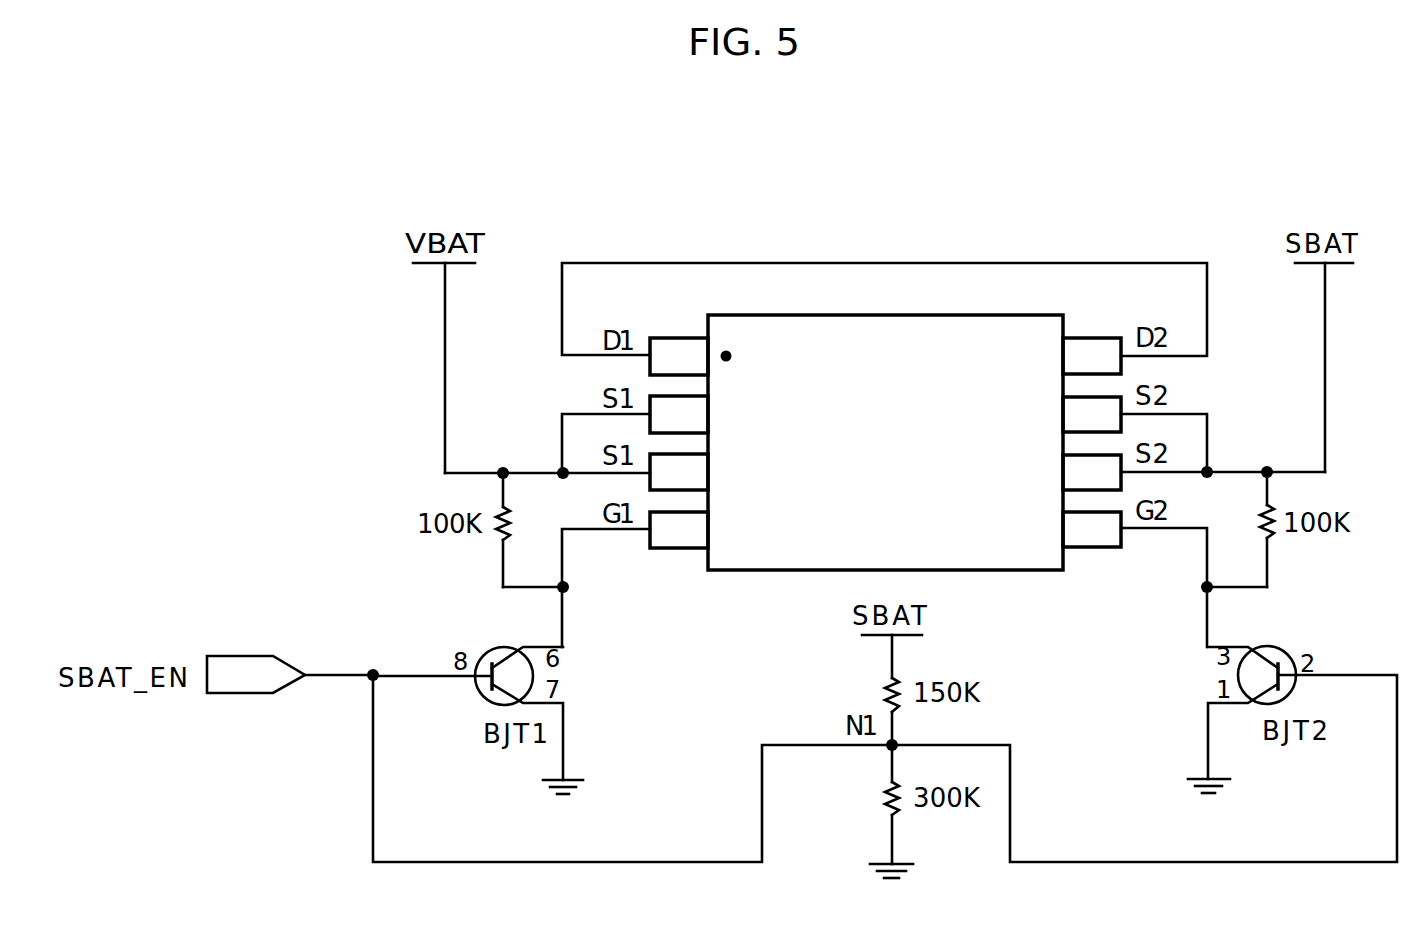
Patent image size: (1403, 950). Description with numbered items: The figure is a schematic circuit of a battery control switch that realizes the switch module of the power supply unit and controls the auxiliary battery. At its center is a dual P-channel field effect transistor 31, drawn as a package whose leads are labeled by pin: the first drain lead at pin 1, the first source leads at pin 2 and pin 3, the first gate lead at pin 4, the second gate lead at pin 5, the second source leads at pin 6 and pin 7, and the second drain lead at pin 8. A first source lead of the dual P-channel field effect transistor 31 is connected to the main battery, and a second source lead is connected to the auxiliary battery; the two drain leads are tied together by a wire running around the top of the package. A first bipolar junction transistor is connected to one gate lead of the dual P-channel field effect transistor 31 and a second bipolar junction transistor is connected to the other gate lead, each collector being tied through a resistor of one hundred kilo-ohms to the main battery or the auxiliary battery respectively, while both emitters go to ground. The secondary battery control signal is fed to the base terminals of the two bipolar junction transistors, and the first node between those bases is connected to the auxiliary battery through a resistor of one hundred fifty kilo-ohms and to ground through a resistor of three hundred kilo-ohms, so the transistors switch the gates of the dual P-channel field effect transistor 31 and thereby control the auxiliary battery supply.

The dual P-channel field effect transistor 31 is at (977, 315).
The FET pin 1 (D1) 1 is at (679, 356).
The FET pin 2 (S1) 2 is at (679, 414).
The FET pin 3 (S1) 3 is at (679, 472).
The FET pin 4 (G1) 4 is at (679, 530).
The FET pin 5 (G2) 5 is at (1092, 529).
The FET pin 6 (S2) 6 is at (1092, 472).
The FET pin 7 (S2) 7 is at (1092, 414).
The FET pin 8 (D2) 8 is at (1092, 356).